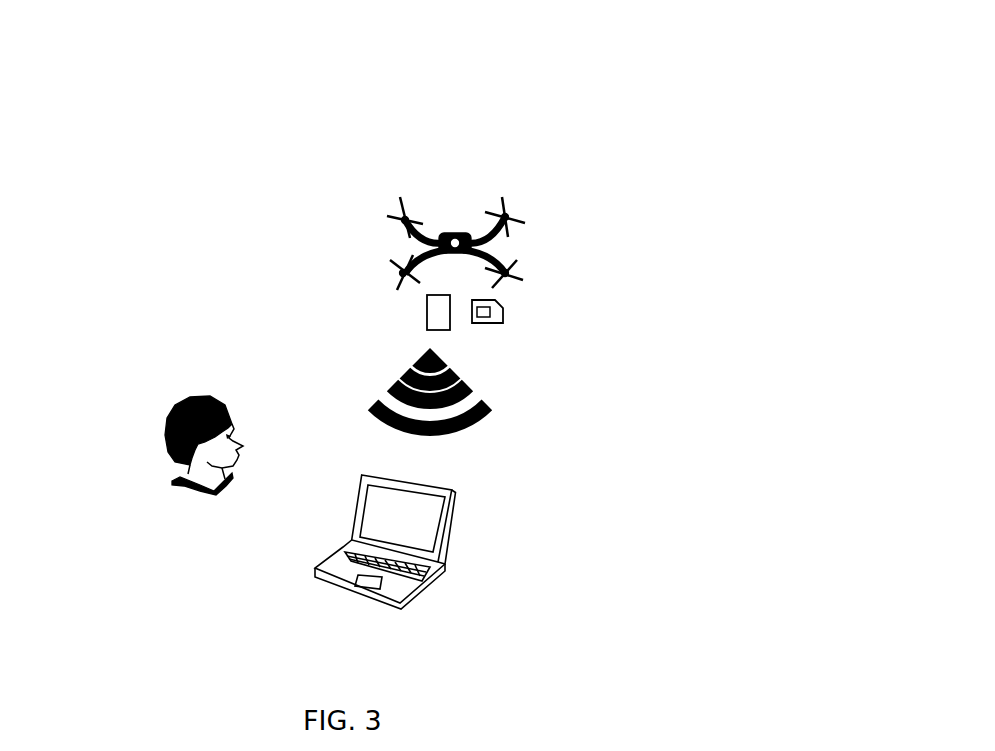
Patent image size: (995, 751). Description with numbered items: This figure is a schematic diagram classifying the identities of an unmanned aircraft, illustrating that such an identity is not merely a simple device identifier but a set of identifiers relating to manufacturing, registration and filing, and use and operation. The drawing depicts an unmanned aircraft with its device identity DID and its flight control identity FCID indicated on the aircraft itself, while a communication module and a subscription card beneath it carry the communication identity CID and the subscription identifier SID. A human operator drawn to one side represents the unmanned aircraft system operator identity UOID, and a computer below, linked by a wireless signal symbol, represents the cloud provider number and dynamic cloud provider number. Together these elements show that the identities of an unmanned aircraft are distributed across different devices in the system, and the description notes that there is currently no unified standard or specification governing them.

The device identity DID is at (400, 198).
The flight control identity FCID is at (503, 197).
The communication identity CID is at (427, 313).
The subscription identifier SID is at (502, 322).
The unmanned aircraft system operator identity UOID is at (168, 440).